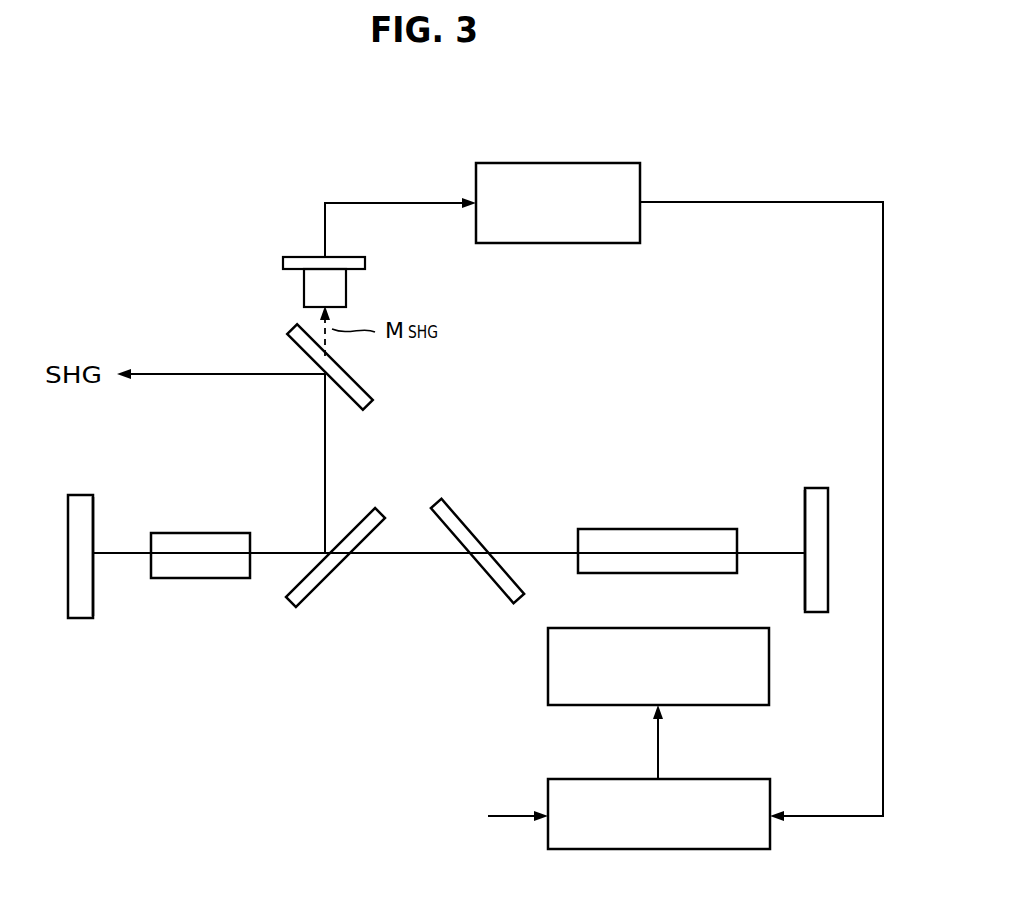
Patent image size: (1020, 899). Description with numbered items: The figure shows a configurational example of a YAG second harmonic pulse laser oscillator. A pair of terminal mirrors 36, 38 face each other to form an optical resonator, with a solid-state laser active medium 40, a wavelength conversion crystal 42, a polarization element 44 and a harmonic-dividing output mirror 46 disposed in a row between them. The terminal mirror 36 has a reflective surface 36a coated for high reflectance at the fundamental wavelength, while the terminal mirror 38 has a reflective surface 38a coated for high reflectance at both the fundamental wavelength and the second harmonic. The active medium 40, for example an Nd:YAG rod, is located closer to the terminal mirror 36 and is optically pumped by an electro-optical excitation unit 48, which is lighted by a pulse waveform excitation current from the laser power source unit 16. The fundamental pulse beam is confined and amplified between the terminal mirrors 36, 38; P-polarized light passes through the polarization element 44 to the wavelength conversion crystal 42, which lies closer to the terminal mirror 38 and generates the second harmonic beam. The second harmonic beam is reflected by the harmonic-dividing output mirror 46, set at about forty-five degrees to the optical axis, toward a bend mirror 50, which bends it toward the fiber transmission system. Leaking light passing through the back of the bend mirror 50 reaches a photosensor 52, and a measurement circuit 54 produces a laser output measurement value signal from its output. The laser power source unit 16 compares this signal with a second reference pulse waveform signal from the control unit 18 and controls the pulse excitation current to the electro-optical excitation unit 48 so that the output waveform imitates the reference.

The laser power source unit 16 is at (660, 850).
The control unit 18 is at (361, 815).
The terminal mirror 36 is at (820, 613).
The reflective surface 36a is at (804, 508).
The terminal mirror 38 is at (84, 619).
The reflective surface 38a is at (94, 507).
The solid-state laser active medium 40 is at (657, 529).
The wavelength conversion crystal 42 is at (200, 533).
The polarization element 44 is at (466, 520).
The harmonic-dividing output mirror 46 is at (336, 572).
The electro-optical excitation unit 48 is at (547, 661).
The bend mirror 50 is at (366, 388).
The photosensor 52 is at (305, 279).
The measurement circuit 54 is at (558, 244).